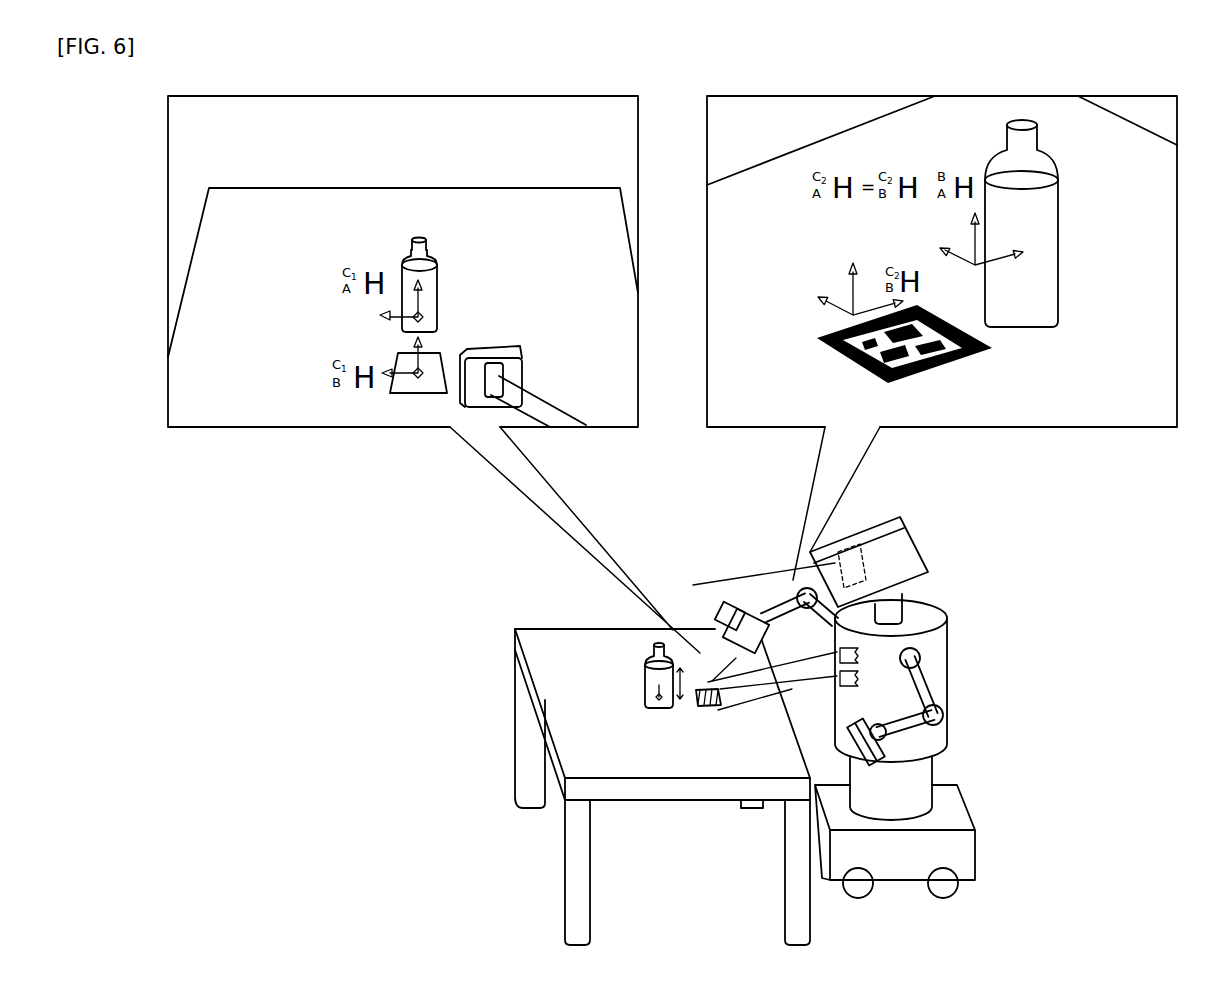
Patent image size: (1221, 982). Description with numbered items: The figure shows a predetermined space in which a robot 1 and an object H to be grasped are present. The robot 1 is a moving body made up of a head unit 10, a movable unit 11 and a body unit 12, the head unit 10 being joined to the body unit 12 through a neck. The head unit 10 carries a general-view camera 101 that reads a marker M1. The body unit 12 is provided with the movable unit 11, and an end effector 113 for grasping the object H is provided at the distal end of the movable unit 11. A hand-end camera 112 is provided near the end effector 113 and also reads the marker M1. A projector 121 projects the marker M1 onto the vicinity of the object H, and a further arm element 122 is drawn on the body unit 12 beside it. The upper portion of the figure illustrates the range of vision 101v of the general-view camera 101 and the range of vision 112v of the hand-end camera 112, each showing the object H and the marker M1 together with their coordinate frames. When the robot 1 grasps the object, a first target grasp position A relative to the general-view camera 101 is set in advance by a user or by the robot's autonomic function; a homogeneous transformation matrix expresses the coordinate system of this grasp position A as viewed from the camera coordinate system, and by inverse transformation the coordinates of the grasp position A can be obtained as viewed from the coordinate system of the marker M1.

The robot 1 is at (925, 684).
The head unit 10 is at (891, 551).
The general-view camera 101 is at (843, 552).
The range of vision of the general-view camera 101v is at (505, 95).
The movable unit 11 is at (562, 396).
The hand-end camera 112 is at (757, 605).
The range of vision of the hand-end camera 112v is at (1042, 95).
The end effector 113 is at (493, 347).
The body unit 12 is at (953, 625).
The projector 121 is at (935, 688).
The upper arm link 122 is at (933, 660).
The first target grasp position A is at (645, 683).
The object H is at (437, 278).
The marker M1 is at (421, 394).